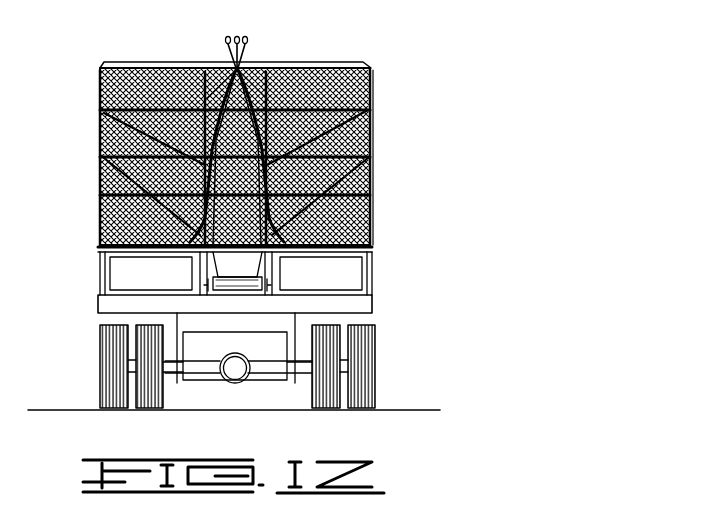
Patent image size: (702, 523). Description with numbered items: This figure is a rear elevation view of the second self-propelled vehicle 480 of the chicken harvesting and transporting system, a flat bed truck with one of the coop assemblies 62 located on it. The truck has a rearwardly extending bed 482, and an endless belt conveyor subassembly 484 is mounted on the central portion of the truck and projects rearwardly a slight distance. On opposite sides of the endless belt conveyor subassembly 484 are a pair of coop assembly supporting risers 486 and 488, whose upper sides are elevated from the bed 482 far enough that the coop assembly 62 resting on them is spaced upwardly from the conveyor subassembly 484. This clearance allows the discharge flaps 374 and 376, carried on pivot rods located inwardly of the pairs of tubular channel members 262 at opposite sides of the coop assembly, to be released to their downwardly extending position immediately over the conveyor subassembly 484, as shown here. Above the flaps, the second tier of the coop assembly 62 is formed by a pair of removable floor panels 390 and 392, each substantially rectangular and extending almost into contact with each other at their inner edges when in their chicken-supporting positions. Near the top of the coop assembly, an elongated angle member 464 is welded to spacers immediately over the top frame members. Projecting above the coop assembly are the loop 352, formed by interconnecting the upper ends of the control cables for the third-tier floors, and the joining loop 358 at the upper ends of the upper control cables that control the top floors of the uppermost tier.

The coop assembly 62 is at (371, 82).
The elongated angle member 464 is at (141, 62).
The loop 352 is at (226, 38).
The joining loop 358 is at (247, 40).
The removable floor panel 390 is at (100, 203).
The removable floor panel 392 is at (372, 190).
The tubular channel member 262 is at (98, 248).
The coop assembly supporting riser 486 is at (100, 258).
The coop assembly supporting riser 488 is at (372, 260).
The discharge flap 374 is at (208, 262).
The discharge flap 376 is at (265, 262).
The bed 482 is at (100, 298).
The vehicle 480 is at (378, 313).
The endless belt conveyor subassembly 484 is at (229, 293).